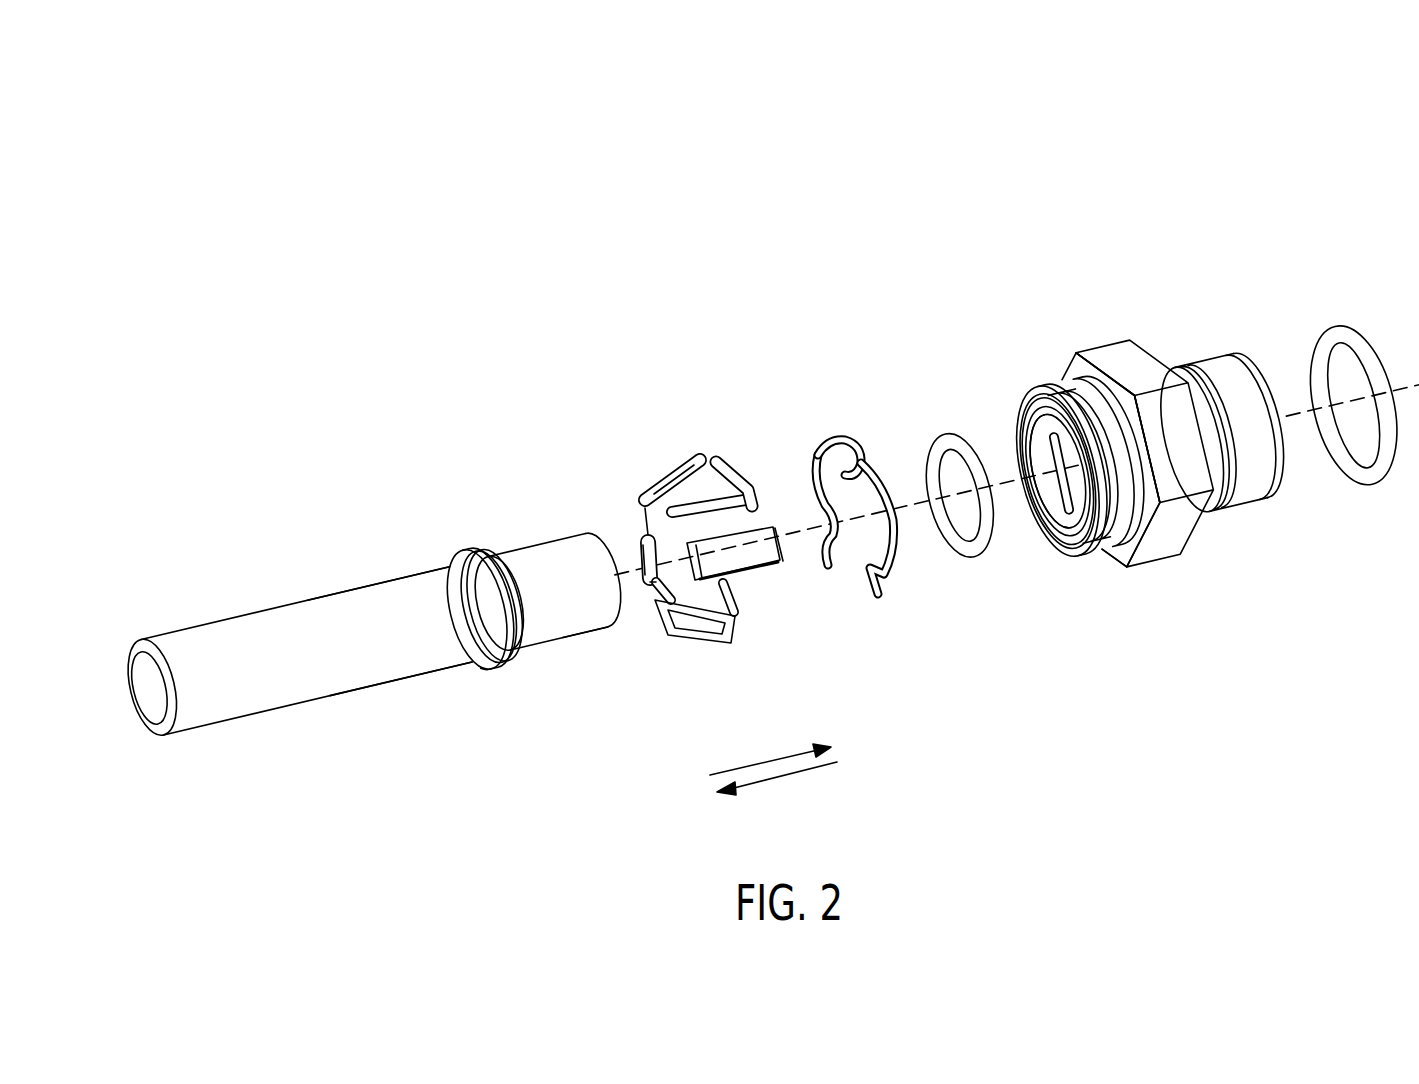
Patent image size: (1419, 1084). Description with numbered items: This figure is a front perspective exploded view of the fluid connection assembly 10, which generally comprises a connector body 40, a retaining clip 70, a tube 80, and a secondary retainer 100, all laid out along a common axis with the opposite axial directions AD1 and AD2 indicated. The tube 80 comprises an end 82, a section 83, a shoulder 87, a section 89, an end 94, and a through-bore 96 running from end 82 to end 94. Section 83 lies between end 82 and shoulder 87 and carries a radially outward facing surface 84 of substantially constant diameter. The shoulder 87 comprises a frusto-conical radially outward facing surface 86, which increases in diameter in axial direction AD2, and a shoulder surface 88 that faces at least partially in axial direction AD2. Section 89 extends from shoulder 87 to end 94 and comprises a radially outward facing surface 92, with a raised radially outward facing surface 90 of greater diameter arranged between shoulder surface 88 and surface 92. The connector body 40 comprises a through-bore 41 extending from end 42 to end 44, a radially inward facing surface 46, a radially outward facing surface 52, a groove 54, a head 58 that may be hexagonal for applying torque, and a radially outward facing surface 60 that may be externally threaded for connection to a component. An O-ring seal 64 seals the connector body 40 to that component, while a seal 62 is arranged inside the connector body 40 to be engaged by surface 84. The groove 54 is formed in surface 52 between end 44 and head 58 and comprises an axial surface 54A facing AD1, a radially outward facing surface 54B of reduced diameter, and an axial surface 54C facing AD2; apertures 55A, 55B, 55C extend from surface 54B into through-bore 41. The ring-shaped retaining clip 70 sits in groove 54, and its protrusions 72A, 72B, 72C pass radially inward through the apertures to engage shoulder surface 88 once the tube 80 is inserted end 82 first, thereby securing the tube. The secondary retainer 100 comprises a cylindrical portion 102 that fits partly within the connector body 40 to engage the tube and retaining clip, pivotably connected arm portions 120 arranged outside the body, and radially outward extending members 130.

The fluid connection assembly 10 is at (500, 168).
The connector body 40 is at (1182, 240).
The through-bore 41 is at (1032, 518).
The end 42 is at (1258, 382).
The end 44 is at (1022, 405).
The radially inward facing surface 46 is at (1058, 547).
The radially outward facing surface 52 is at (1047, 393).
The groove 54 is at (1160, 533).
The axial surface 54A is at (1083, 553).
The radially outward facing surface 54B is at (1098, 393).
The axial surface 54C is at (1130, 378).
The aperture 55A is at (1025, 462).
The aperture 55B is at (1065, 385).
The aperture 55C is at (1118, 560).
The head 58 is at (1198, 487).
The radially outward facing surface 60 is at (1262, 467).
The seal 62 is at (972, 580).
The seal or O-ring 64 is at (1364, 497).
The retaining clip 70 is at (849, 600).
The protrusion 72A is at (820, 547).
The protrusion 72B is at (843, 470).
The protrusion 72C is at (870, 593).
The tube 80 is at (291, 490).
The end 82 is at (607, 557).
The section 83 is at (568, 650).
The radially outward facing surface 84 is at (543, 573).
The radially outward facing surface 86 is at (510, 587).
The shoulder 87 is at (488, 682).
The shoulder surface 88 is at (453, 547).
The section 89 is at (408, 698).
The radially outward facing surface 90 is at (450, 560).
The radially outward facing surface 92 is at (299, 624).
The end 94 is at (158, 730).
The through-bore 96 is at (163, 689).
The secondary retainer 100 is at (679, 401).
The cylindrical portion 102 is at (655, 574).
The arm portion 120 is at (716, 464).
The member 130 is at (762, 472).
The axial direction AD1 is at (770, 760).
The axial direction AD2 is at (780, 778).